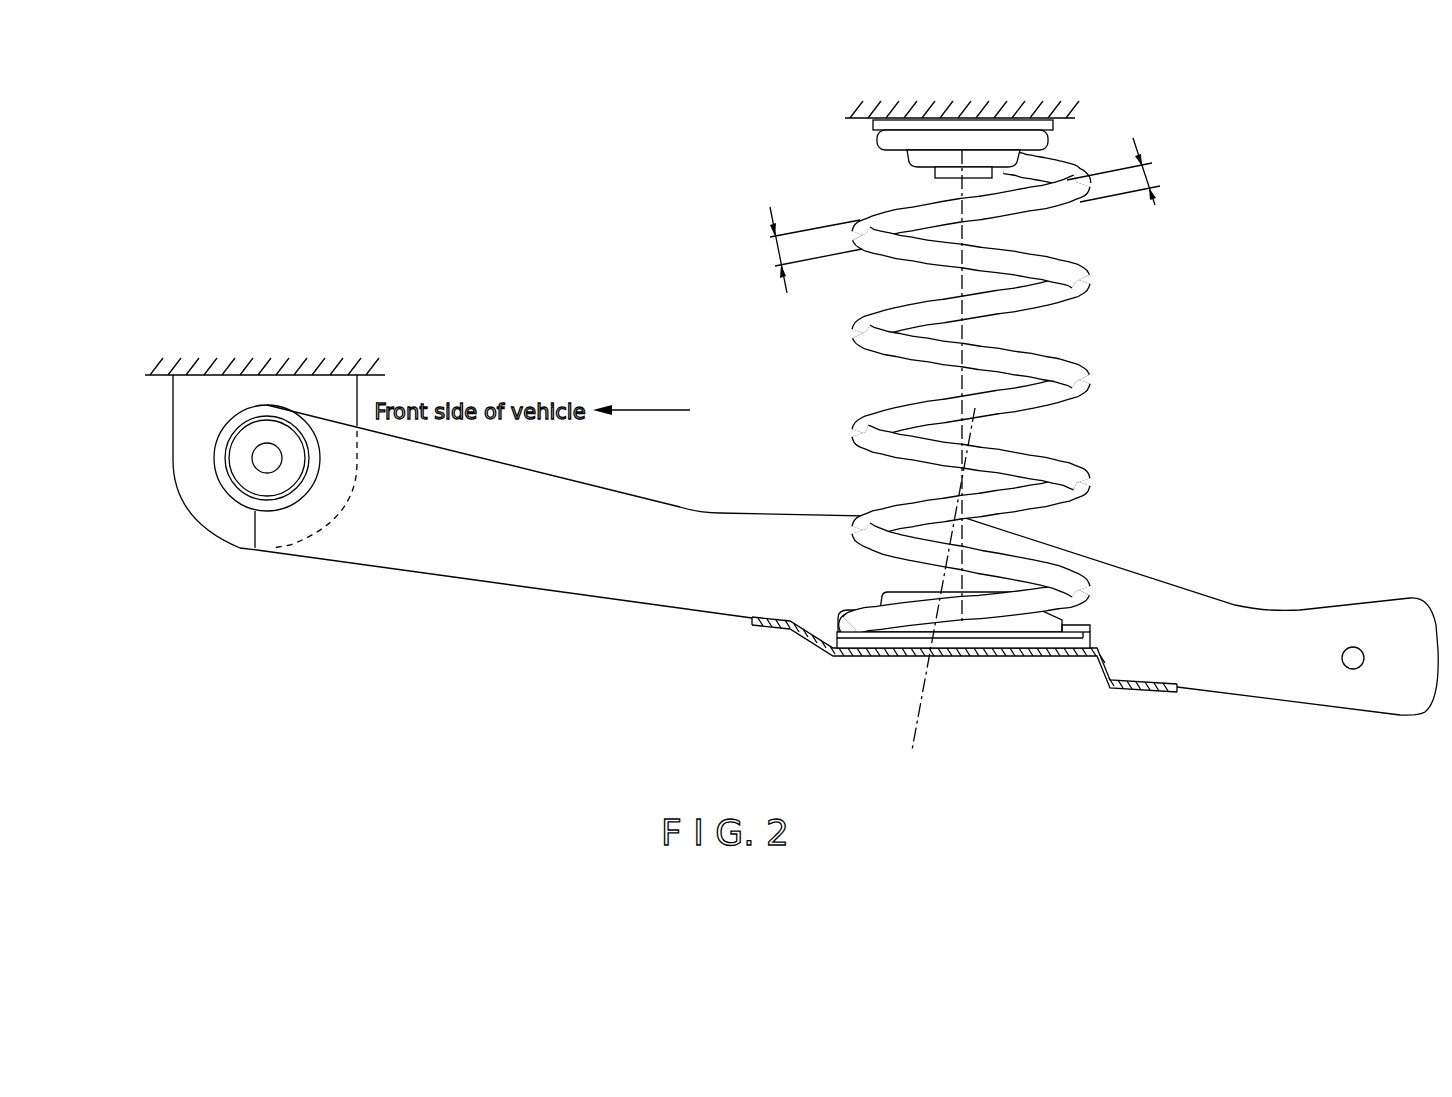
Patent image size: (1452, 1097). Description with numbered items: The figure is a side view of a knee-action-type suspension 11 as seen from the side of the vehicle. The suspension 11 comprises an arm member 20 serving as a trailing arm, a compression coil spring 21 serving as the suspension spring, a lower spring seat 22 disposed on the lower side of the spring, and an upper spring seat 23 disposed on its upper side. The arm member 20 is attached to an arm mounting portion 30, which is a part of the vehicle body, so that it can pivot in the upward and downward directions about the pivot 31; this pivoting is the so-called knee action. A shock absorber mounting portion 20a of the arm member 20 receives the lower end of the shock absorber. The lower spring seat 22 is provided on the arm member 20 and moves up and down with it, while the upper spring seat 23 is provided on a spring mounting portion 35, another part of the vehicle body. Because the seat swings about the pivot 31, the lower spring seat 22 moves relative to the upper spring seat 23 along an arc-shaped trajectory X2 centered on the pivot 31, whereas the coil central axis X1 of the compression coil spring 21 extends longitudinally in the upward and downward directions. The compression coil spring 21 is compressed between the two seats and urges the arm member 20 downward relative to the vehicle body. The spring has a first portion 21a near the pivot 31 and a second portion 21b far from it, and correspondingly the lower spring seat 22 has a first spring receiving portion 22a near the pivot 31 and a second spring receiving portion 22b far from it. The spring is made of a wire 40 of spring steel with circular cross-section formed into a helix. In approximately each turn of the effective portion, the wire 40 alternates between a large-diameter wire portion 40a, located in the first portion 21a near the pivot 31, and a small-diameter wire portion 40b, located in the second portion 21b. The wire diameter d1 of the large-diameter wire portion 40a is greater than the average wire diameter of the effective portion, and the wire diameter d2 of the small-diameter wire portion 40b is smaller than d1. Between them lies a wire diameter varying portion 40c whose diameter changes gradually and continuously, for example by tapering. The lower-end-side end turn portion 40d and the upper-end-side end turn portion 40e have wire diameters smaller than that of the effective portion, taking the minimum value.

The suspension 11 is at (640, 135).
The arm member 20 is at (630, 602).
The shock absorber mounting portion 20a is at (1353, 670).
The compression coil spring 21 is at (988, 347).
The first portion 21a is at (838, 322).
The second portion 21b is at (1100, 358).
The lower spring seat 22 is at (998, 641).
The first spring receiving portion 22a is at (860, 630).
The second spring receiving portion 22b is at (1042, 620).
The upper spring seat 23 is at (942, 122).
The arm mounting portion 30 is at (280, 373).
The pivot 31 is at (270, 462).
The spring mounting portion 35 is at (872, 110).
The wire 40 is at (905, 206).
The large-diameter wire portion 40a is at (856, 232).
The small-diameter wire portion 40b is at (1093, 178).
The wire diameter varying portion 40c is at (1005, 212).
The lower-end-side end turn portion 40d is at (902, 634).
The upper-end-side end turn portion 40e is at (1027, 132).
The wire diameter of the large-diameter wire portion d1 is at (775, 252).
The wire diameter of the small-diameter wire portion d2 is at (1143, 176).
The coil central axis X1 is at (963, 340).
The arc-shaped trajectory X2 is at (938, 678).